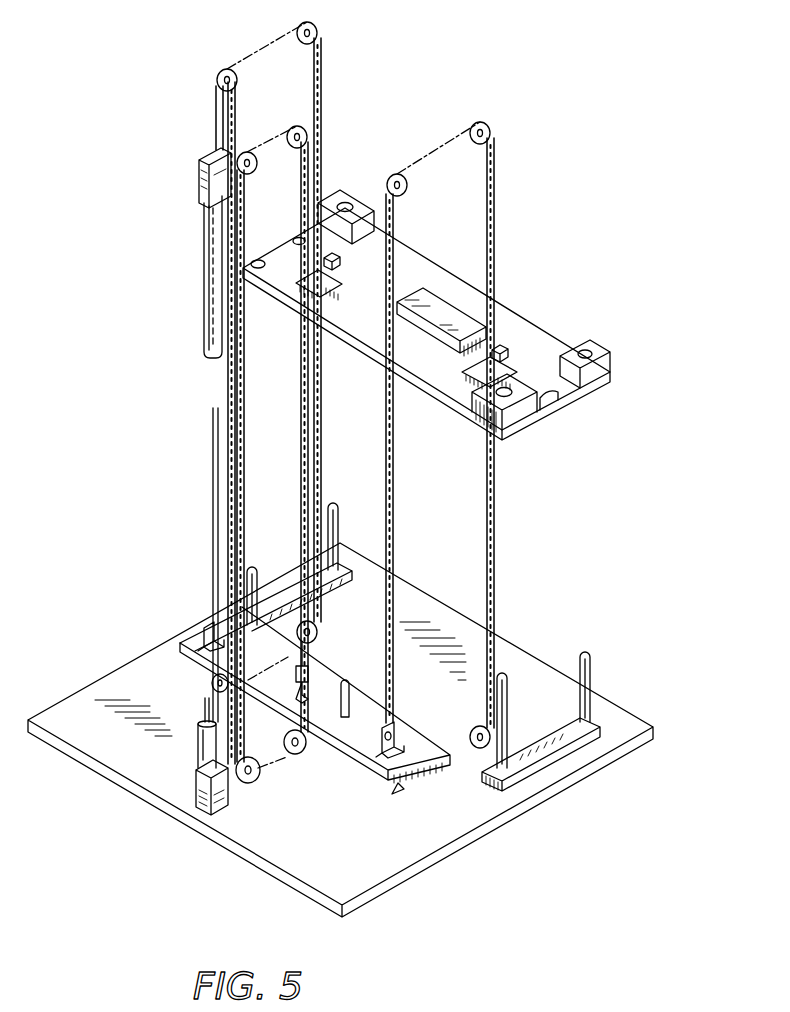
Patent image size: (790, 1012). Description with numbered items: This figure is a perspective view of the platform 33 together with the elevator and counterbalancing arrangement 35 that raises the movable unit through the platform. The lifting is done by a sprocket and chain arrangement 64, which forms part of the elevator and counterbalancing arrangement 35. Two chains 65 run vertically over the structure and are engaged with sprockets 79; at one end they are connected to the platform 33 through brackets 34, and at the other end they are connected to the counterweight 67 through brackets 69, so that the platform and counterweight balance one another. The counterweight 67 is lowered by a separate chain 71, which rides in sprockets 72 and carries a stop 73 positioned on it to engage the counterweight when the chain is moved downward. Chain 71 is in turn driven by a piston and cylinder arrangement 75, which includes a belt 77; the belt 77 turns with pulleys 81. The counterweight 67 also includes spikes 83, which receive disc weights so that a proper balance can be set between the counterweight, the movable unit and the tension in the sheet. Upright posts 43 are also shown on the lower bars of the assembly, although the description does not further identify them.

The platform 33 is at (510, 316).
The brackets 34 is at (337, 251).
The elevator and counterbalancing arrangement 35 is at (160, 502).
The guide post 43 is at (338, 516).
The sprocket and chain arrangement 64 is at (214, 126).
The chains 65 is at (322, 66).
The counterweight 67 is at (329, 681).
The brackets 69 is at (207, 624).
The chain 71 is at (300, 377).
The sprockets 72 is at (297, 125).
The stop 73 is at (296, 679).
The piston and cylinder arrangement 75 is at (203, 262).
The belt 77 is at (227, 373).
The sprockets 79 is at (494, 128).
The pulleys 81 is at (238, 155).
The spikes 83 is at (350, 690).